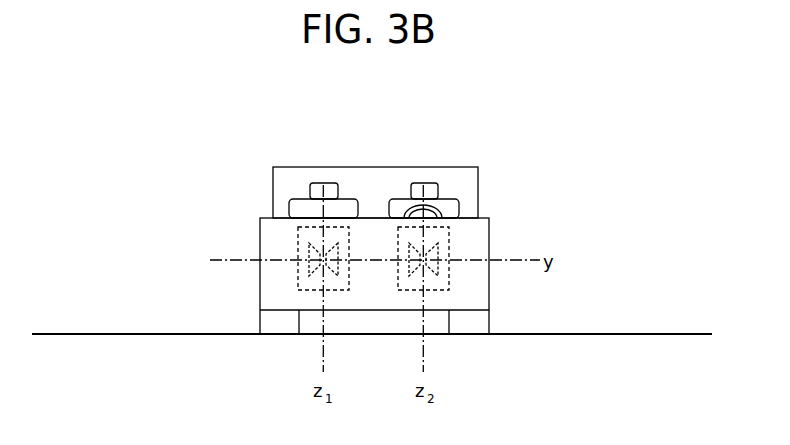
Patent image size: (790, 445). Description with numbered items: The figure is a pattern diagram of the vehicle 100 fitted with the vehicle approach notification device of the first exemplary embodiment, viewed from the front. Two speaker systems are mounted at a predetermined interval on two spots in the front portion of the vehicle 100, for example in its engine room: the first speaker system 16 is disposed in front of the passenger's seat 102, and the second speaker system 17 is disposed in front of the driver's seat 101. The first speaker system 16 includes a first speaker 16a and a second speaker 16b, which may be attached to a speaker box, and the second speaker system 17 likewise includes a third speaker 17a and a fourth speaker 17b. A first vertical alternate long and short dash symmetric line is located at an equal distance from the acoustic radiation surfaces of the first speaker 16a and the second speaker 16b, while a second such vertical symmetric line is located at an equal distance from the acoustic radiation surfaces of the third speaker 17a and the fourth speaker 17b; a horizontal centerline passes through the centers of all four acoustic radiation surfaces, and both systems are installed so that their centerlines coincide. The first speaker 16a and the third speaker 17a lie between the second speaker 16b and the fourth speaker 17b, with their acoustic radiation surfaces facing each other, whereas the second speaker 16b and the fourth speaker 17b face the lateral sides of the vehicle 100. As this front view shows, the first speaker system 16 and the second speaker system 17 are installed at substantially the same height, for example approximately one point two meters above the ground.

The vehicle 100 is at (448, 167).
The driver's seat 101 is at (450, 207).
The passenger's seat 102 is at (297, 207).
The first speaker system 16 is at (298, 277).
The first speaker 16a is at (337, 250).
The second speaker 16b is at (311, 251).
The second speaker system 17 is at (450, 278).
The third speaker 17a is at (420, 250).
The fourth speaker 17b is at (432, 252).